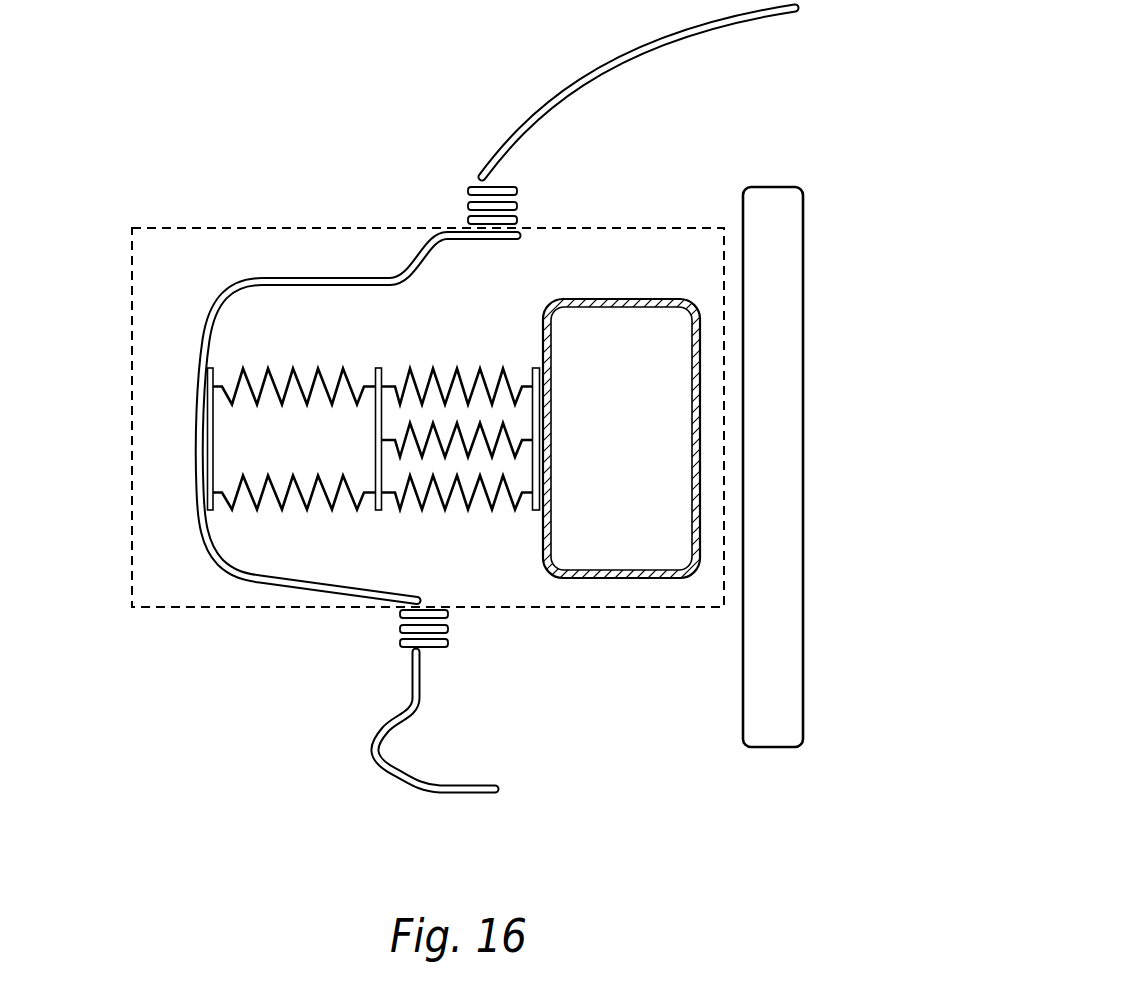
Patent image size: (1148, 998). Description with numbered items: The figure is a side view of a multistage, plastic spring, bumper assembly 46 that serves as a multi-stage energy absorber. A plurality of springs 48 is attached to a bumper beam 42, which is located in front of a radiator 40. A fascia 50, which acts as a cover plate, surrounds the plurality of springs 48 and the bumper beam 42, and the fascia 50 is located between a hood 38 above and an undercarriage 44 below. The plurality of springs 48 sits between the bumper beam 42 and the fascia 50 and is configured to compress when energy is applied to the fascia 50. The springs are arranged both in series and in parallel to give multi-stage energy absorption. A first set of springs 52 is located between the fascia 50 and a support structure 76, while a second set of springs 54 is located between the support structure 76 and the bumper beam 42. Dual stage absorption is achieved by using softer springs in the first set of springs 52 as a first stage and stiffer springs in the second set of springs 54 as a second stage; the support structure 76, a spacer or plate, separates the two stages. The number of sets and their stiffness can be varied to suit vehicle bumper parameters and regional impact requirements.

The hood 38 is at (602, 64).
The radiator 40 is at (804, 348).
The bumper beam 42 is at (615, 300).
The undercarriage 44 is at (418, 785).
The multistage plastic spring bumper assembly 46 is at (179, 227).
The plurality of springs 48 is at (333, 535).
The fascia 50 is at (203, 358).
The first set of springs 52 is at (303, 358).
The second set of springs 54 is at (460, 533).
The support structure 76 is at (382, 373).